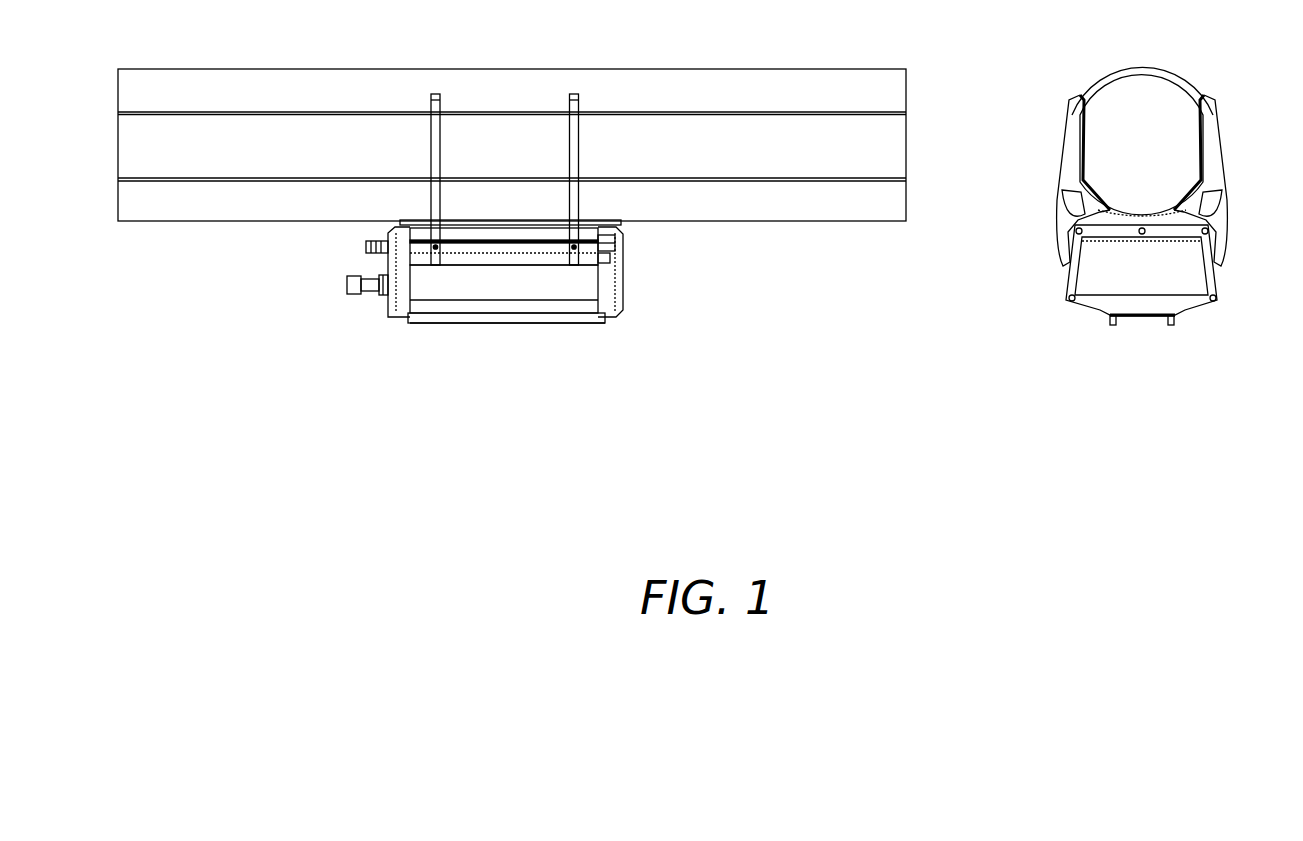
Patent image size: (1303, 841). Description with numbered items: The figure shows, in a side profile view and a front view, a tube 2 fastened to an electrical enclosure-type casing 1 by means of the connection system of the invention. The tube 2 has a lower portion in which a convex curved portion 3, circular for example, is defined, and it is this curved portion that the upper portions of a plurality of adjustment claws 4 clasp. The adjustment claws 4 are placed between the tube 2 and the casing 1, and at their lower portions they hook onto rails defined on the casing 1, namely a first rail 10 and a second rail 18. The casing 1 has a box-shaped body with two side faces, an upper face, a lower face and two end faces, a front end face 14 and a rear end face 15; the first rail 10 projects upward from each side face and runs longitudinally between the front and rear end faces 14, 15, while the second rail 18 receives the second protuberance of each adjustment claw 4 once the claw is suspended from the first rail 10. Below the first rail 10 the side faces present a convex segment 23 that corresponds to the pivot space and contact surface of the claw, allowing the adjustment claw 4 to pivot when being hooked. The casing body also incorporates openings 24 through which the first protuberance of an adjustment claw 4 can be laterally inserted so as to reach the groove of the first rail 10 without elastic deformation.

The casing 1 is at (458, 338).
The tube 2 is at (893, 134).
The convex curved portion 3 is at (838, 208).
The adjustment claw 4 is at (433, 198).
The first rail 10 is at (503, 250).
The front end face 14 is at (386, 292).
The rear end face 15 is at (620, 292).
The second rail 18 is at (1088, 240).
The convex segment 23 is at (596, 248).
The openings 24 is at (395, 250).